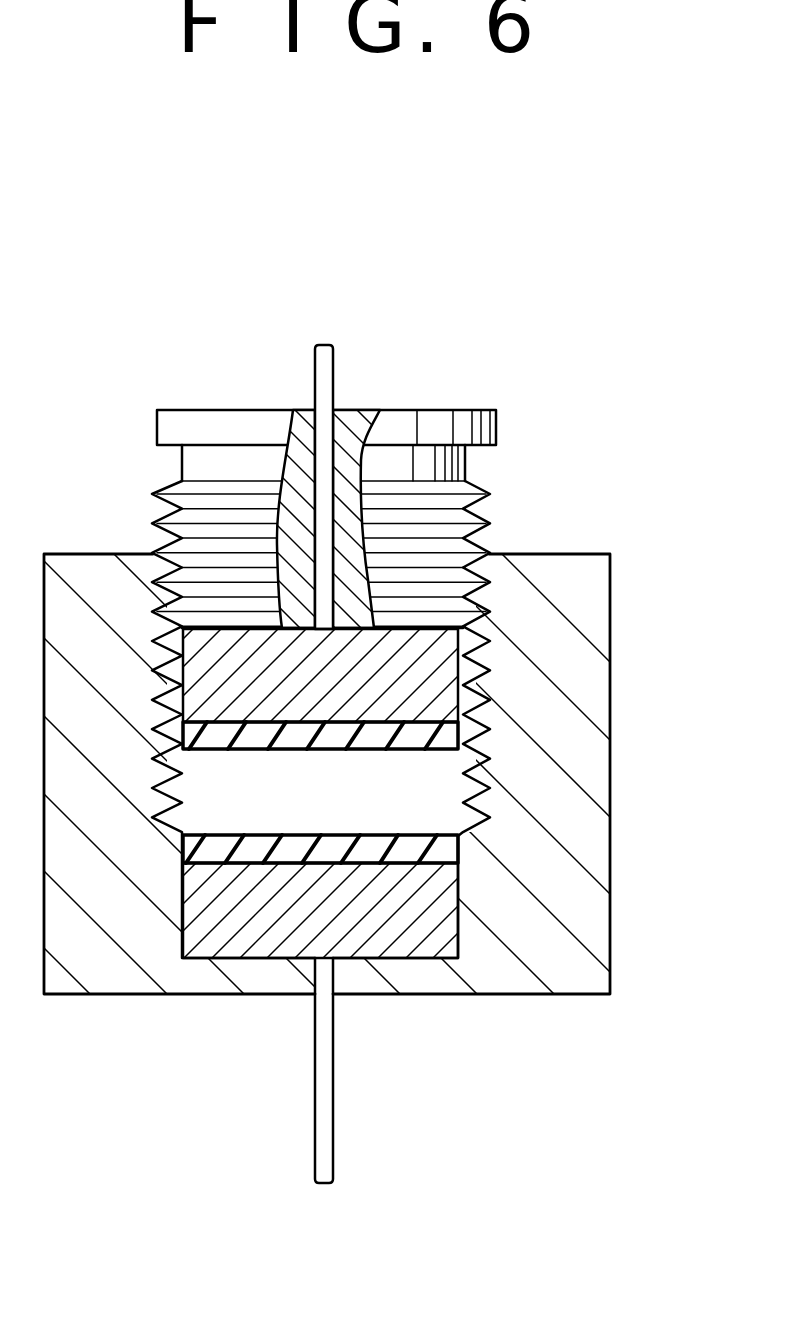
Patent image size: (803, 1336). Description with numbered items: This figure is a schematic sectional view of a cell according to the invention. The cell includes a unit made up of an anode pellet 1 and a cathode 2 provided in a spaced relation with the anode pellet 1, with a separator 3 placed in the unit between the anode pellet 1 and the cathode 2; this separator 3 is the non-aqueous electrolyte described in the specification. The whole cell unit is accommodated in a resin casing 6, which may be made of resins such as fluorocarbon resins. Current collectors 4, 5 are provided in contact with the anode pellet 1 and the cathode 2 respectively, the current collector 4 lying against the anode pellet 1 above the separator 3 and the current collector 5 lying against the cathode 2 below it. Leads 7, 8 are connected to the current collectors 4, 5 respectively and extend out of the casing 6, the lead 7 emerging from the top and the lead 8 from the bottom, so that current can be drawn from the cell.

The anode pellet 1 is at (430, 734).
The cathode 2 is at (440, 850).
The separator 3 is at (425, 793).
The current collector 4 is at (430, 672).
The current collector 5 is at (432, 927).
The resin casing 6 is at (590, 588).
The lead 7 is at (335, 375).
The lead 8 is at (335, 1107).